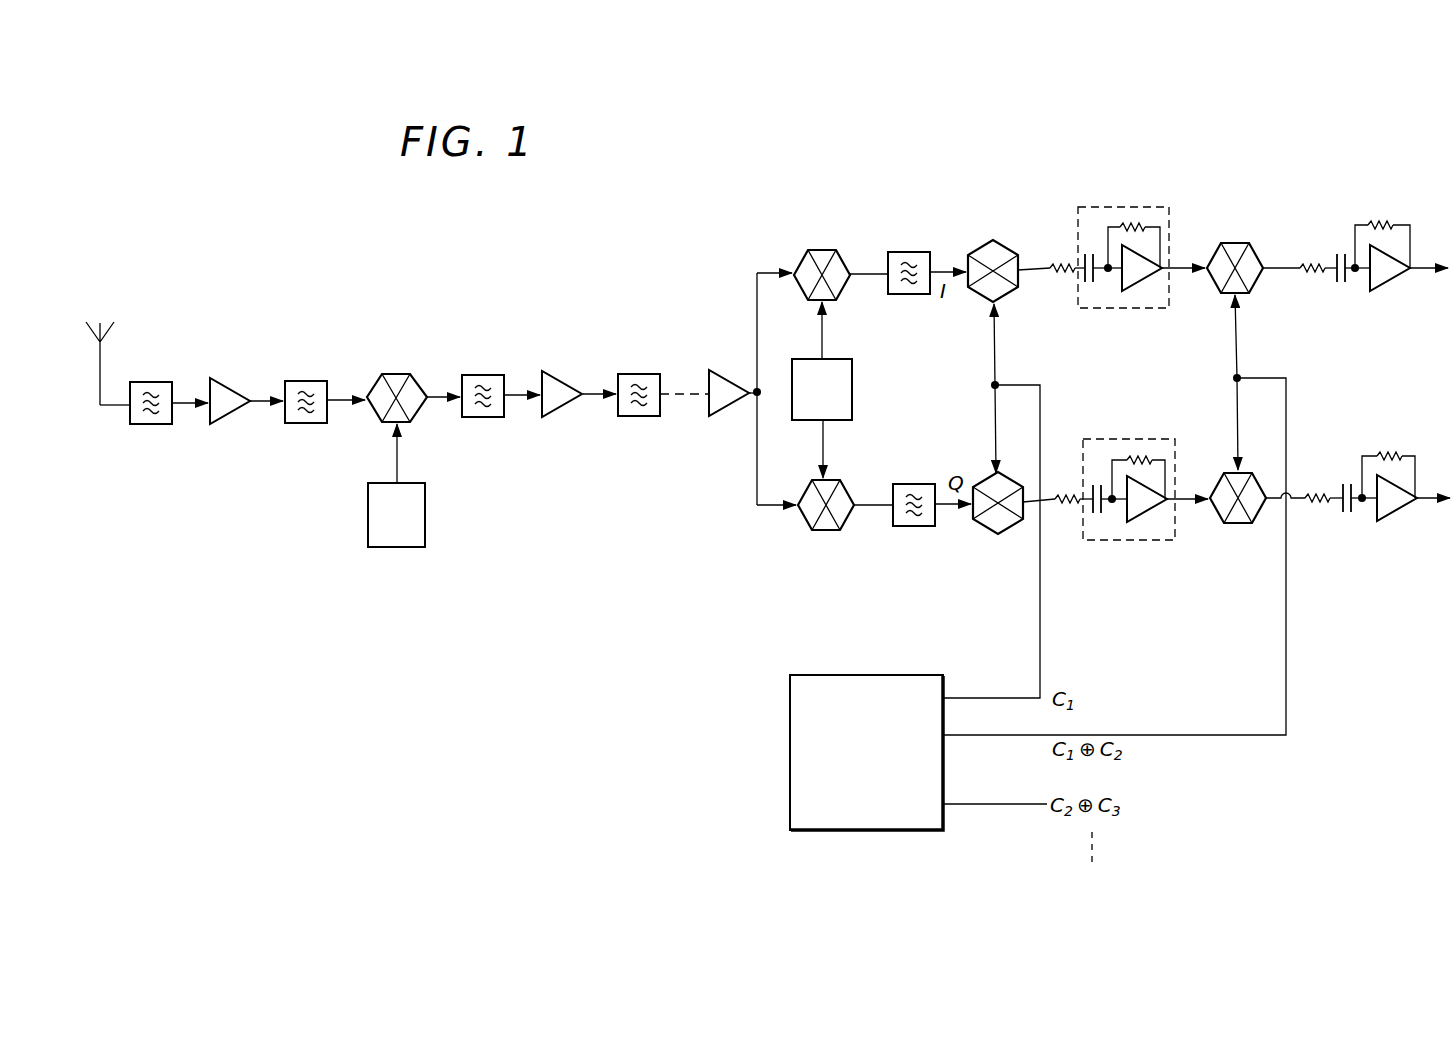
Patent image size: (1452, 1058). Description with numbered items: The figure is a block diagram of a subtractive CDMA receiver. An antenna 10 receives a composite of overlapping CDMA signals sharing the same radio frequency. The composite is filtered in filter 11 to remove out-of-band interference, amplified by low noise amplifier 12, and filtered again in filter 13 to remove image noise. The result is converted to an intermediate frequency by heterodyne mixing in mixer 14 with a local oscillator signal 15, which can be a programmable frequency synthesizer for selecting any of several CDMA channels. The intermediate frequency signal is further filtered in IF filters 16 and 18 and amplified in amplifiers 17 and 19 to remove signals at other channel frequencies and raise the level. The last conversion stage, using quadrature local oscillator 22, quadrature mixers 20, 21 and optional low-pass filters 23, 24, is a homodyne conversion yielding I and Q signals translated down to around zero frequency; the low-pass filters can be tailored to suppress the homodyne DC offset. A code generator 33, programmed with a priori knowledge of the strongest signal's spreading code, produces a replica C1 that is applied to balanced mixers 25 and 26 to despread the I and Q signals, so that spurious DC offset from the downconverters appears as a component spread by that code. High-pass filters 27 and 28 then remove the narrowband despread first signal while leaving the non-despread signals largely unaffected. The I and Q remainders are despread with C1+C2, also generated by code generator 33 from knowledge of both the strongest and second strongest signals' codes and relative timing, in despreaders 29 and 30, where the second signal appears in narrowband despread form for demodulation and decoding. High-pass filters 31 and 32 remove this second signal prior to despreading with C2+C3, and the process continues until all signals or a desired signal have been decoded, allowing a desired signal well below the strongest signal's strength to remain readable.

The antenna 10 is at (112, 327).
The filter 11 is at (152, 425).
The low noise amplifier 12 is at (228, 420).
The filter 13 is at (307, 424).
The mixer 14 is at (395, 373).
The local oscillator signal 15 is at (397, 548).
The IF filter 16 is at (481, 418).
The amplifier 17 is at (561, 416).
The IF filter 18 is at (640, 417).
The amplifier 19 is at (727, 416).
The quadrature mixer 20 is at (820, 250).
The quadrature mixer 21 is at (828, 531).
The quadrature local oscillator 22 is at (853, 390).
The low-pass filter 23 is at (905, 252).
The low-pass filter 24 is at (913, 527).
The balanced mixer 25 is at (993, 240).
The balanced mixer 26 is at (1000, 533).
The high-pass filter 27 is at (1139, 194).
The high-pass filter 28 is at (1142, 551).
The despreader 29 is at (1235, 242).
The despreader 30 is at (1245, 524).
The high-pass filter 31 is at (1385, 212).
The high-pass filter 32 is at (1400, 518).
The code generator 33 is at (865, 831).